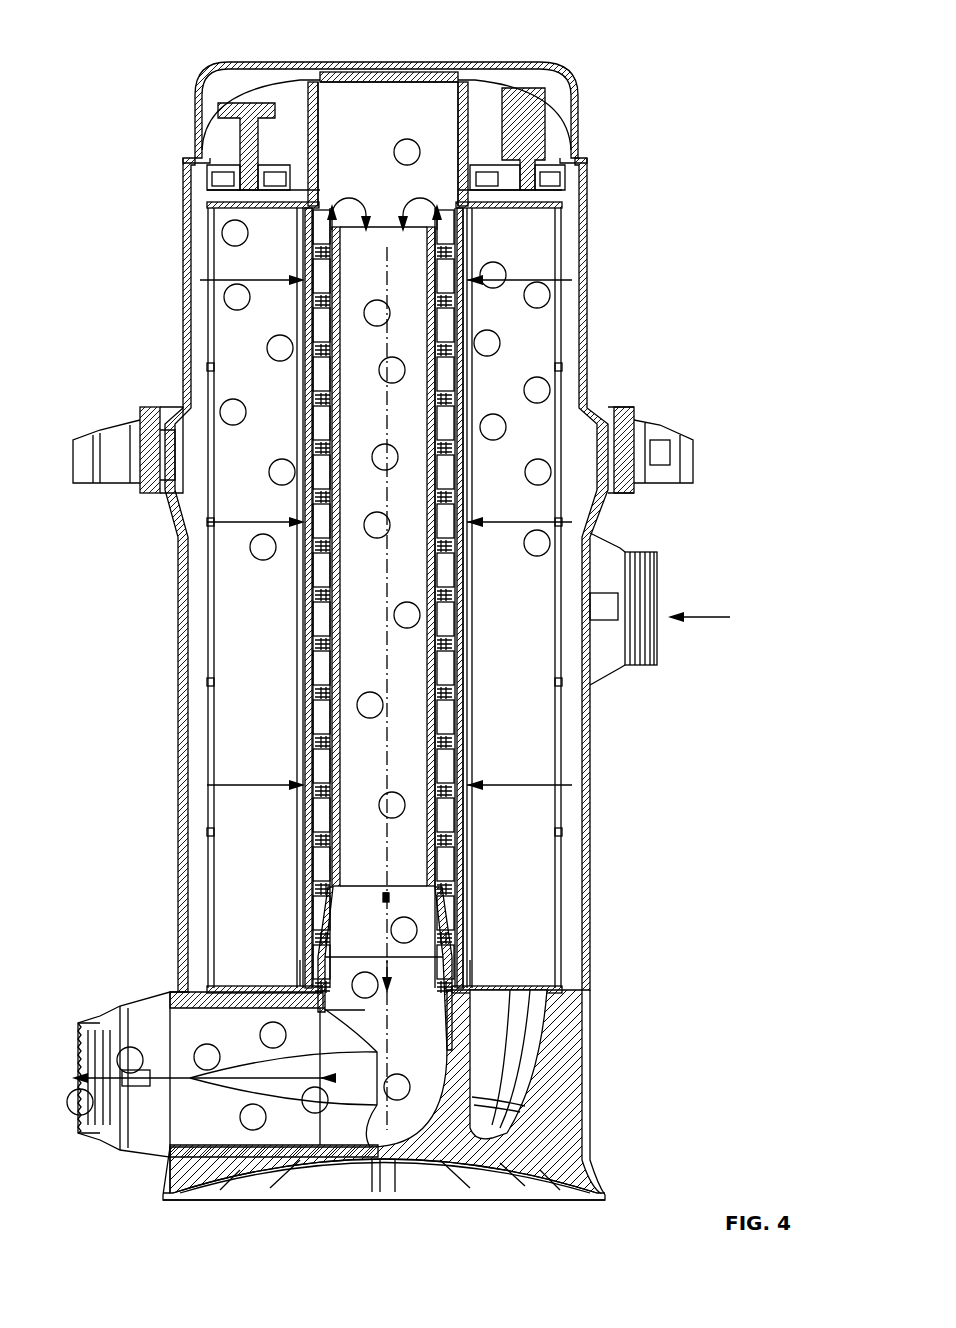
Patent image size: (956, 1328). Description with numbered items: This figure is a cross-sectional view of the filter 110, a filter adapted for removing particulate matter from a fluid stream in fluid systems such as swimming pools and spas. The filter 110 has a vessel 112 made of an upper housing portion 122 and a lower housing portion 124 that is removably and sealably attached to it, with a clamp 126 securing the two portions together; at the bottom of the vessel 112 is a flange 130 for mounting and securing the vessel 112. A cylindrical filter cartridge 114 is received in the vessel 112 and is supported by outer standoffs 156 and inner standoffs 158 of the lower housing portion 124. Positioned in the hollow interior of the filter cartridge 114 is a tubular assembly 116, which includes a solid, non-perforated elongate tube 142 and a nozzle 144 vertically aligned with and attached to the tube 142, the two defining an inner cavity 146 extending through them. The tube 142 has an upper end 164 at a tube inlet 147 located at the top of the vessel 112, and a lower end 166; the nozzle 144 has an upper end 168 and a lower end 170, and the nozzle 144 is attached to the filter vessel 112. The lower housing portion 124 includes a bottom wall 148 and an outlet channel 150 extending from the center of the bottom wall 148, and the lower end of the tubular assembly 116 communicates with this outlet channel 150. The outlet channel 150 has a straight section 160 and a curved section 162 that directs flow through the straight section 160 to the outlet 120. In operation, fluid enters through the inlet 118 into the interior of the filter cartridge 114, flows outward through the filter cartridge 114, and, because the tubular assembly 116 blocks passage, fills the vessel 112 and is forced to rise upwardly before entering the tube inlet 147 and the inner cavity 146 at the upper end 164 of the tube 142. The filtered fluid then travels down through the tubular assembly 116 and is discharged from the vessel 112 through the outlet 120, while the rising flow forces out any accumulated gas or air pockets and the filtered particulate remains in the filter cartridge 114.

The filter 110 is at (685, 62).
The vessel 112 is at (178, 740).
The cylindrical filter cartridge 114 is at (196, 603).
The tubular assembly 116 is at (328, 332).
The inlet 118 is at (641, 666).
The outlet 120 is at (82, 1026).
The upper housing portion 122 is at (300, 277).
The lower housing portion 124 is at (186, 912).
The clamp 126 is at (115, 486).
The flange 130 is at (422, 1183).
The elongate tube 142 is at (448, 382).
The nozzle 144 is at (430, 942).
The inner cavity 146 is at (410, 357).
The tube inlet 147 is at (383, 230).
The bottom wall 148 is at (487, 1130).
The outlet channel 150 is at (343, 1093).
The outer standoffs 156 is at (560, 1078).
The inner standoffs 158 is at (457, 1102).
The straight section 160 is at (225, 1150).
The curved section 162 is at (442, 1058).
The upper end 164 is at (318, 250).
The lower end 166 is at (330, 864).
The upper end 168 is at (320, 834).
The lower end 170 is at (373, 1060).